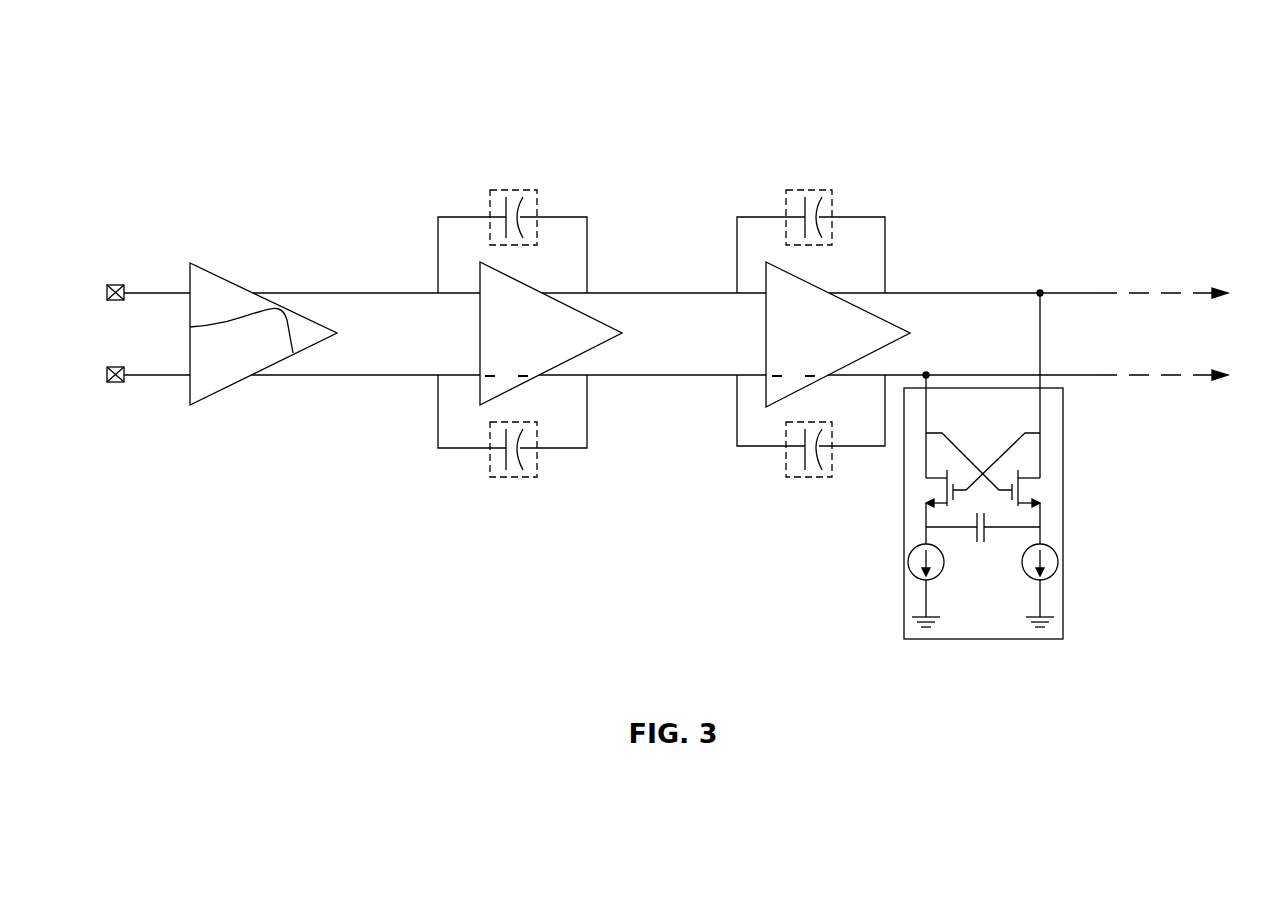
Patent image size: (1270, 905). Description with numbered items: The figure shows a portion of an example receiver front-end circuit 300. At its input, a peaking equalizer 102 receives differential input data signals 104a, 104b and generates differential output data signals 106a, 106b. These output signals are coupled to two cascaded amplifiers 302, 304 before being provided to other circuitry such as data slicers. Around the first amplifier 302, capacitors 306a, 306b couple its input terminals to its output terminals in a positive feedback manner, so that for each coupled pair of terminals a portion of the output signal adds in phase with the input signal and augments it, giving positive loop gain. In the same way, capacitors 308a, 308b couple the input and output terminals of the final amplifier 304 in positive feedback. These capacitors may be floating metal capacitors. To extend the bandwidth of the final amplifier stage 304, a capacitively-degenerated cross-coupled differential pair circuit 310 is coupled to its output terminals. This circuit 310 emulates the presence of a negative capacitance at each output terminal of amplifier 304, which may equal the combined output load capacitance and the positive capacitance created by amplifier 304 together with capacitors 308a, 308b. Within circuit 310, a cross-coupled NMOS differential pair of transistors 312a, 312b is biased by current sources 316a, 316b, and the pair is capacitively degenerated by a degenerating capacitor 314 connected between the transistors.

The receiver front-end circuit 300 is at (1211, 61).
The peaking equalizer 102 is at (222, 272).
The differential input data signal 104a is at (141, 292).
The differential input data signal 104b is at (146, 374).
The differential output data signal 106a is at (348, 292).
The differential output data signal 106b is at (300, 378).
The amplifier 302 is at (480, 338).
The amplifier 304 is at (766, 338).
The capacitor 306a is at (505, 190).
The capacitor 306b is at (497, 480).
The capacitor 308a is at (802, 190).
The capacitor 308b is at (797, 480).
The capacitively-degenerated cross-coupled differential pair circuit 310 is at (984, 466).
The cross-coupled NMOS differential pair transistor 312a is at (1042, 492).
The cross-coupled NMOS differential pair transistor 312b is at (924, 501).
The degenerating capacitor 314 is at (980, 570).
The current source 316a is at (1063, 570).
The current source 316b is at (903, 570).